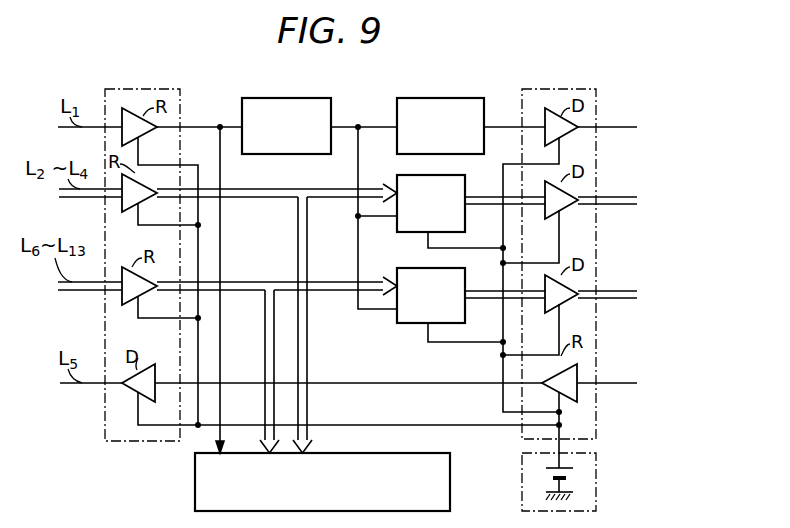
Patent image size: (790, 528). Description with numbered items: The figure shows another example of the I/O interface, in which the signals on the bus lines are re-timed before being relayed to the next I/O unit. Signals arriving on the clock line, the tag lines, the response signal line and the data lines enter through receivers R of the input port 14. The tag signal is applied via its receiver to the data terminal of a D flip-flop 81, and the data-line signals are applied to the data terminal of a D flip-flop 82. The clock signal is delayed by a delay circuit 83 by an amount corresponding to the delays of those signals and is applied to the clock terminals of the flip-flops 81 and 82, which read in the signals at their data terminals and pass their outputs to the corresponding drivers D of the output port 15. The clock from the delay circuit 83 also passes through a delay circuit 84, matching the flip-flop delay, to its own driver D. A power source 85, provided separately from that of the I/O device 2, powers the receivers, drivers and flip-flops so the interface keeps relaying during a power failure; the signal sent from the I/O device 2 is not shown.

The input port 14 is at (181, 114).
The output port 15 is at (546, 89).
The D flip-flop 81 is at (399, 176).
The D flip-flop 82 is at (399, 268).
The delay circuit 83 is at (289, 98).
The delay circuit 84 is at (440, 98).
The power source 85 is at (597, 480).
The I/O device 2 is at (451, 478).